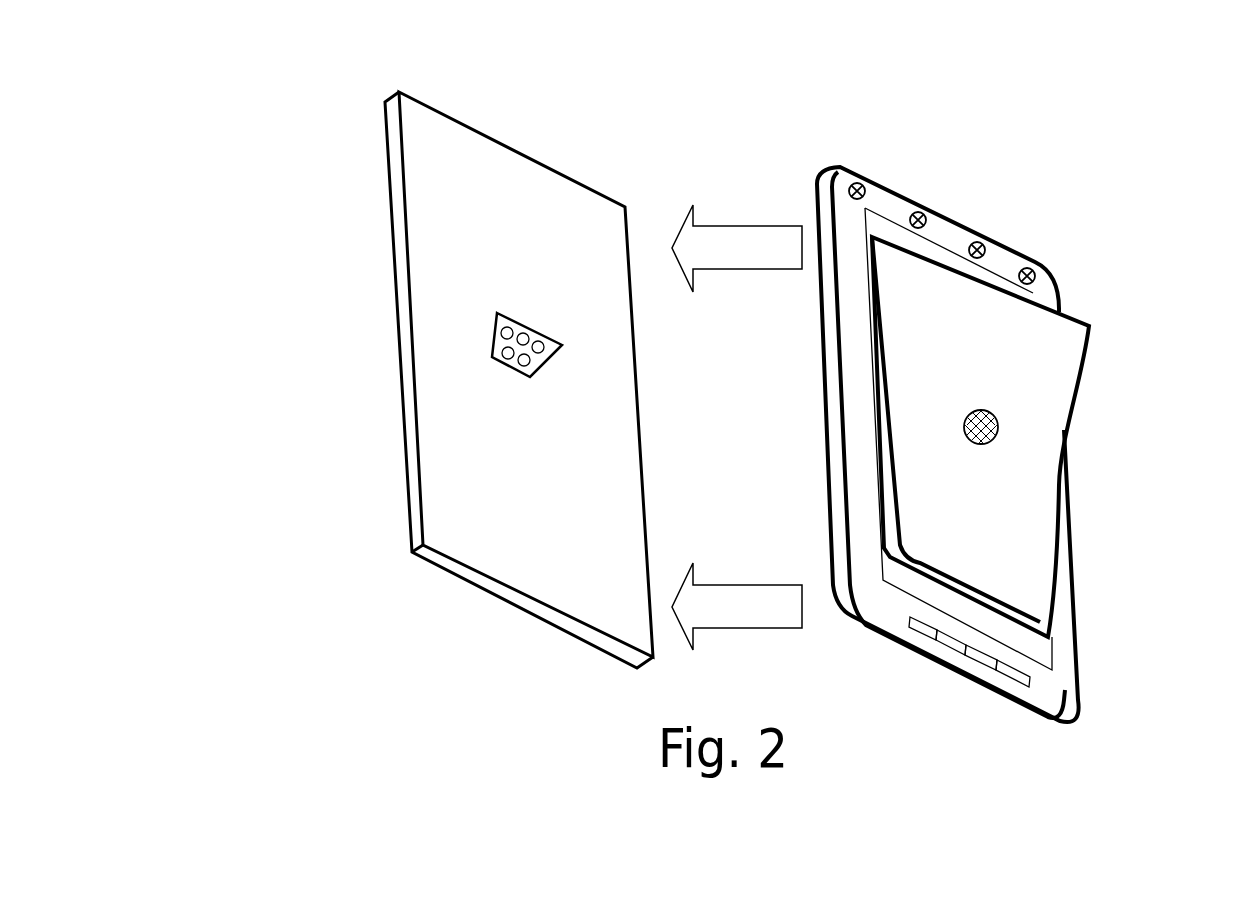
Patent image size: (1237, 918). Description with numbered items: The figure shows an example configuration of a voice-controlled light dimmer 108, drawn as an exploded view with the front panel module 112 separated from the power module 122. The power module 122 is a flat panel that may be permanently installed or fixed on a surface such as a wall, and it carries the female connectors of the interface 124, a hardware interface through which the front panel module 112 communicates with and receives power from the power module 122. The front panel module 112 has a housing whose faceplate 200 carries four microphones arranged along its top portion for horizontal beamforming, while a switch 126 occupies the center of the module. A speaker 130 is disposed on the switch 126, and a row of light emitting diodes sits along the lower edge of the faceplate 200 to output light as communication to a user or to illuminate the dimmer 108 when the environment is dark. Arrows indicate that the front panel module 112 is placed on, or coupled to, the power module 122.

The voice-controlled light dimmer 108 is at (263, 57).
The front panel module 112 is at (980, 438).
The power module 122 is at (361, 164).
The interface 124 is at (492, 357).
The switch 126 is at (1009, 530).
The speaker 130 is at (992, 444).
The faceplate 200 is at (842, 218).